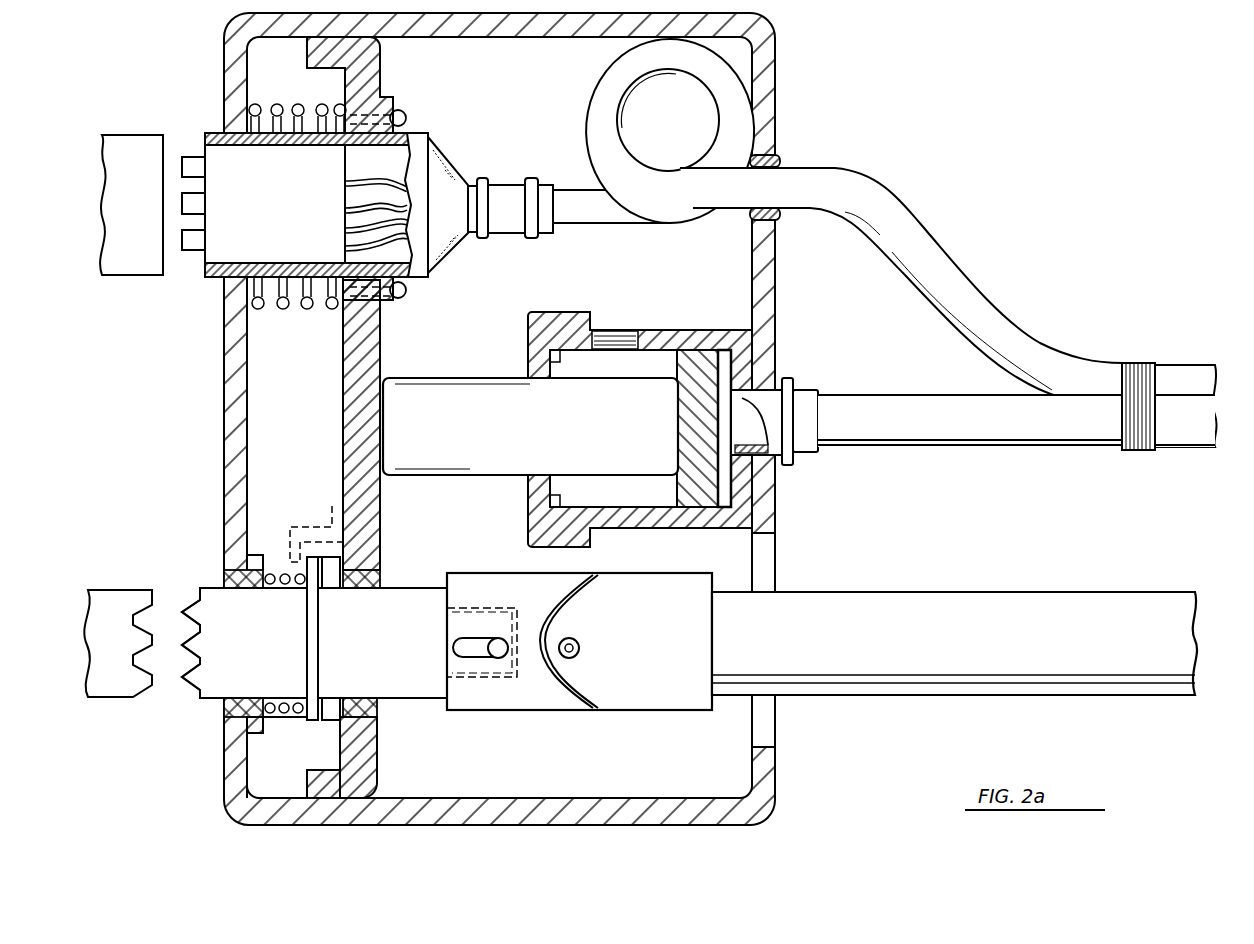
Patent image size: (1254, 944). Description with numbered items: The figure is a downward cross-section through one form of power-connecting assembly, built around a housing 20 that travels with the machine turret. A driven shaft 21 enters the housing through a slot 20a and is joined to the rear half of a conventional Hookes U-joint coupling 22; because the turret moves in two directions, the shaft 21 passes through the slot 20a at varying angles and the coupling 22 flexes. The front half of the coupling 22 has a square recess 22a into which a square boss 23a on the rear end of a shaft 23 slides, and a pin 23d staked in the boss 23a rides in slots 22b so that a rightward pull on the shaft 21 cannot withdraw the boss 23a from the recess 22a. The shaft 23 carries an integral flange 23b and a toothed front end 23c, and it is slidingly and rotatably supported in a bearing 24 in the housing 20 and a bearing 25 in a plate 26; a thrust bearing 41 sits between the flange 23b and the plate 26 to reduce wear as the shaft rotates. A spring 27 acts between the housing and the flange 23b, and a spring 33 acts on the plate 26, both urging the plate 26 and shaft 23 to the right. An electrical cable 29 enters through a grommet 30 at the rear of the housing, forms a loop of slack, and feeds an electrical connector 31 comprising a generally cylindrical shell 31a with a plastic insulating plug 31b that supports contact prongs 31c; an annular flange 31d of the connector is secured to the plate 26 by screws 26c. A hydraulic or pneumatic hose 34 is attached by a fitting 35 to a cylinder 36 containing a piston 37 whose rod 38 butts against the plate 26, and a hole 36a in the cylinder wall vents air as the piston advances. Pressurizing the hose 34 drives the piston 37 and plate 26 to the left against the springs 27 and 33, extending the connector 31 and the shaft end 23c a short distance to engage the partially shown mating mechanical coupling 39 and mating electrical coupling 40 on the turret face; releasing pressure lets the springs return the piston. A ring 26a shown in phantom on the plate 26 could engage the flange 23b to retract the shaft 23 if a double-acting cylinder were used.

The housing 20 is at (463, 825).
The slot 20a is at (768, 572).
The shaft 21 is at (882, 695).
The Hookes U-joint coupling 22 is at (666, 722).
The recess 22a is at (519, 618).
The slot 22b is at (475, 655).
The shaft 23 is at (436, 688).
The square boss 23a is at (482, 620).
The integral flange 23b is at (311, 720).
The toothed front end 23c is at (182, 650).
The pin 23d is at (498, 655).
The bearing 24 is at (230, 572).
The bearing 25 is at (378, 585).
The plate 26 is at (382, 518).
The ring 26a is at (332, 508).
The screws 26c is at (408, 117).
The spring 27 is at (288, 718).
The electrical cable 29 is at (980, 280).
The grommet 30 is at (790, 158).
The electrical connector 31 is at (336, 240).
The shell 31a is at (297, 148).
The plastic insulating plug 31b is at (288, 226).
The contact prongs 31c is at (184, 232).
The annular flange 31d is at (398, 110).
The spring 33 is at (309, 309).
The hydraulic hose 34 is at (967, 447).
The fitting 35 is at (797, 376).
The cylinder 36 is at (713, 330).
The hole 36a is at (620, 330).
The piston 37 is at (677, 483).
The shaft or rod 38 is at (490, 378).
The mating mechanical coupling 39 is at (117, 698).
The mating electrical coupling 40 is at (130, 278).
The thrust bearing 41 is at (331, 723).